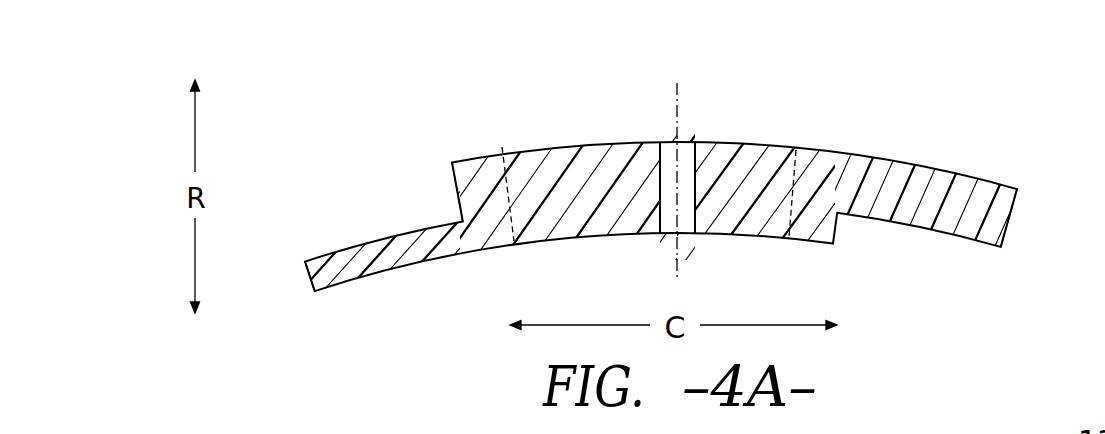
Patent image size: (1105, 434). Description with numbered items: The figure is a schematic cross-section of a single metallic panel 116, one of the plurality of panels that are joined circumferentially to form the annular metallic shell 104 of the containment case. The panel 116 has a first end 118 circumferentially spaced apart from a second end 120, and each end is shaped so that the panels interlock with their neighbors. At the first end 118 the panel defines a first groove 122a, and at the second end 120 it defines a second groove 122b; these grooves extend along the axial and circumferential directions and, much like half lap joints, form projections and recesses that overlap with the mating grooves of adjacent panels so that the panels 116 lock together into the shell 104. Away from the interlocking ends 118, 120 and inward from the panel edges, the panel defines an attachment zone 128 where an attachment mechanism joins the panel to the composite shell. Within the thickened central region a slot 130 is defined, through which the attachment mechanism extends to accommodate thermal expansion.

The metallic shell 104 is at (802, 95).
The metallic panel 116 is at (400, 153).
The first end 118 is at (363, 308).
The second end 120 is at (1004, 153).
The first groove 122a is at (370, 230).
The second groove 122b is at (903, 248).
The attachment zone 128 is at (583, 165).
The slot 130 is at (687, 140).